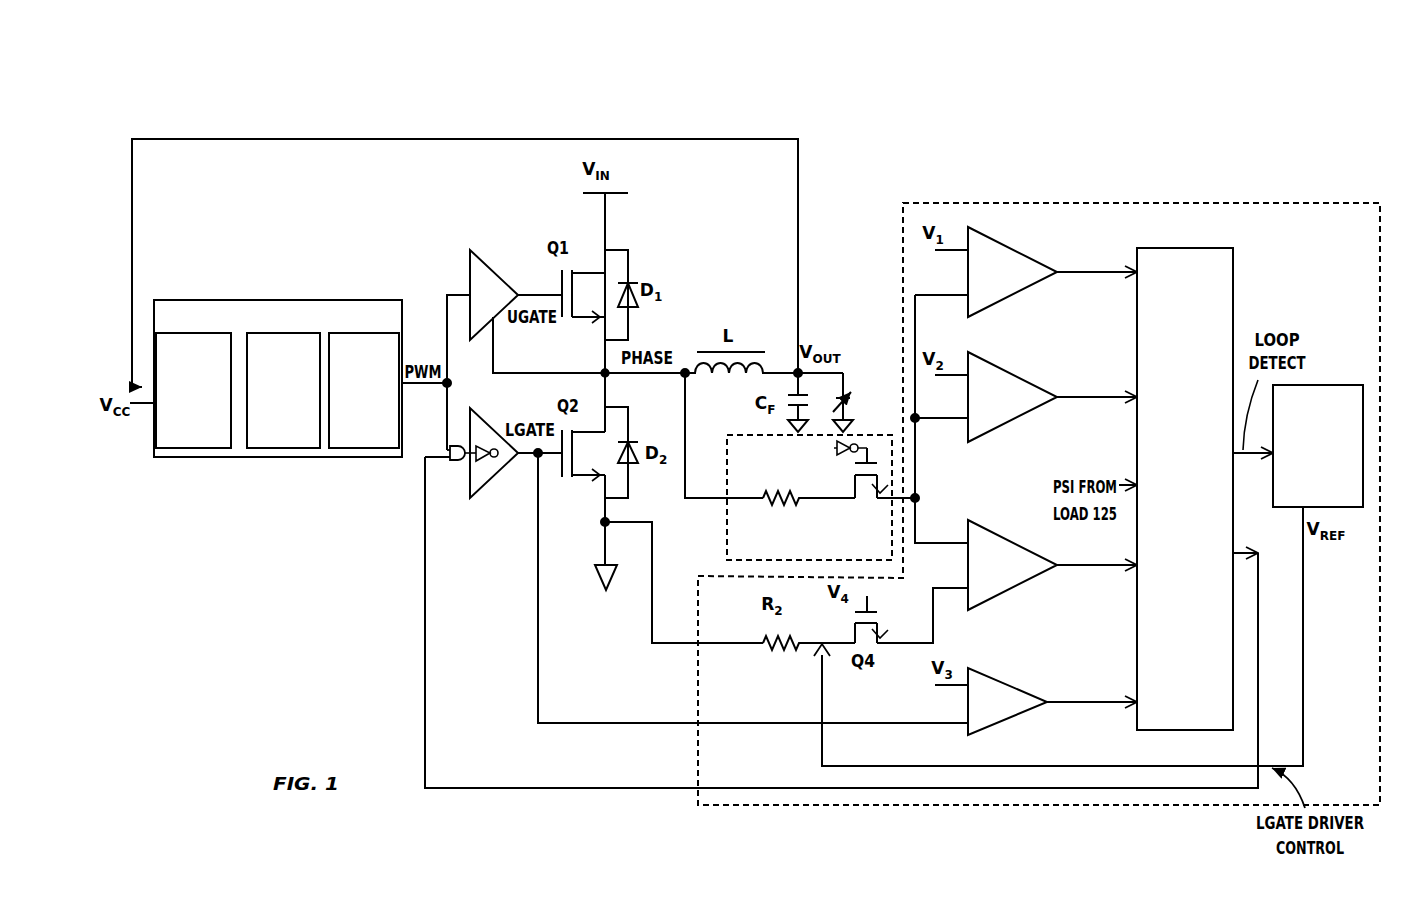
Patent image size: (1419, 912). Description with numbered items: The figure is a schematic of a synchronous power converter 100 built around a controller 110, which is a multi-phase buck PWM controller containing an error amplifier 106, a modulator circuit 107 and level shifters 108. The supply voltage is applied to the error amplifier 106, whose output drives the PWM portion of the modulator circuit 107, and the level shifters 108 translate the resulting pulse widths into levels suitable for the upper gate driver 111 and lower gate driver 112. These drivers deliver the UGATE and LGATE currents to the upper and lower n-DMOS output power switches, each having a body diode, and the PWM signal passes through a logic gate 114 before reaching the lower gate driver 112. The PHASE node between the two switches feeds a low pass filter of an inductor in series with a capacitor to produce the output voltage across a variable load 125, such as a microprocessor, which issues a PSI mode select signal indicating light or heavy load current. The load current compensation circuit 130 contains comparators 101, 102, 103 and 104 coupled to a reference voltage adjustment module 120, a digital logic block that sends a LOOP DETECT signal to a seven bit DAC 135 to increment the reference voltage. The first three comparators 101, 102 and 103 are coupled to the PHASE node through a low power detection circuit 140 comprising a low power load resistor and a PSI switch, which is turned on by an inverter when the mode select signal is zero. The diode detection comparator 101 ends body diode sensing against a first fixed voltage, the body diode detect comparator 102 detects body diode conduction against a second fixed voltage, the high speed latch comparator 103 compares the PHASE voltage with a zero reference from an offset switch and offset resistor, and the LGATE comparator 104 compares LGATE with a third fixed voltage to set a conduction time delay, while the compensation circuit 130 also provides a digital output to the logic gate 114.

The synchronous power converter 100 is at (273, 78).
The diode detection comparator 101 is at (1019, 251).
The body diode detect comparator 102 is at (1019, 372).
The high speed latch comparator 103 is at (1012, 535).
The LGATE comparator 104 is at (1022, 688).
The error amplifier 106 is at (168, 437).
The modulator circuit 107 is at (268, 437).
The level shifters 108 is at (349, 437).
The controller 110 is at (315, 298).
The upper gate driver 111 is at (470, 265).
The lower gate driver 112 is at (483, 421).
The logic gate 114 is at (460, 463).
The reference voltage adjustment module 120 is at (1165, 612).
The variable load 125 is at (862, 395).
The load current compensation circuit 130 is at (1060, 203).
The digital to analog converter 135 is at (1298, 485).
The low power detection circuit 140 is at (727, 500).